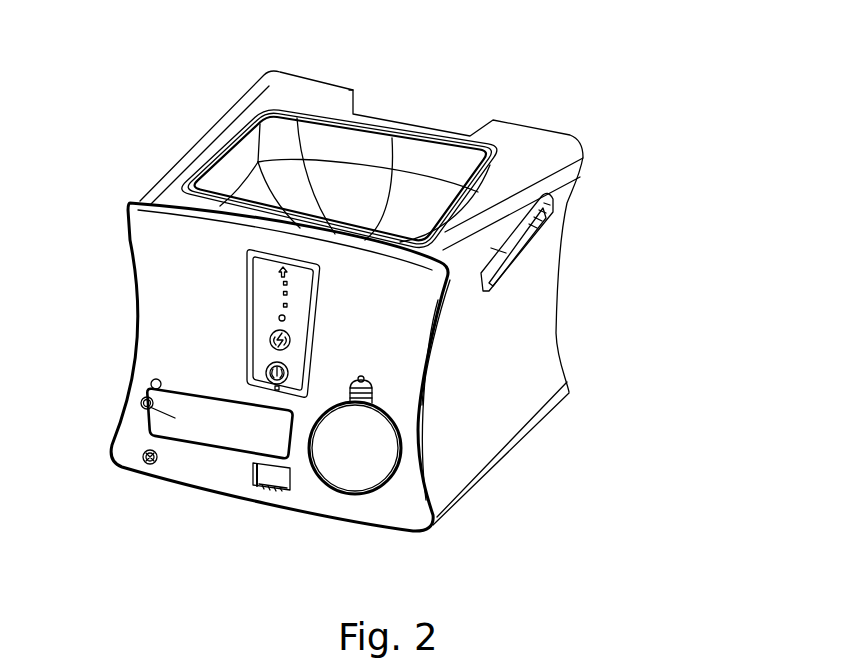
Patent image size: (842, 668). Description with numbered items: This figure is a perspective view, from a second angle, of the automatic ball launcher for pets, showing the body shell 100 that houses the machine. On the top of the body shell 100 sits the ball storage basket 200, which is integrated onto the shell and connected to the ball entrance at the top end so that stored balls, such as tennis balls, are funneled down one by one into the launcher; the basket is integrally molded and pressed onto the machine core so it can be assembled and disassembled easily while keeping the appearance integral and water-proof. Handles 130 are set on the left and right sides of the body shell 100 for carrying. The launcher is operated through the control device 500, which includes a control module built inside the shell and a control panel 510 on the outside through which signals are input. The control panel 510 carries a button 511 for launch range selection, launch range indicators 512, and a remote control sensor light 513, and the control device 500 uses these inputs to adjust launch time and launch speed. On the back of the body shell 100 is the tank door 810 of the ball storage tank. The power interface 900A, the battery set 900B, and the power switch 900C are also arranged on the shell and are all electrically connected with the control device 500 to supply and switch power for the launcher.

The body shell 100 is at (263, 82).
The ball storage basket 200 is at (450, 177).
The handles 130 is at (507, 245).
The control device 500 is at (405, 338).
The control panel 510 is at (262, 265).
The button for a launch range selection 511 is at (270, 340).
The launch range indicators 512 is at (288, 292).
The remote control sensor light 513 is at (278, 318).
The tank door 810 is at (358, 450).
The power interface 900A is at (150, 465).
The battery set 900B is at (143, 400).
The power switch 900C is at (263, 477).